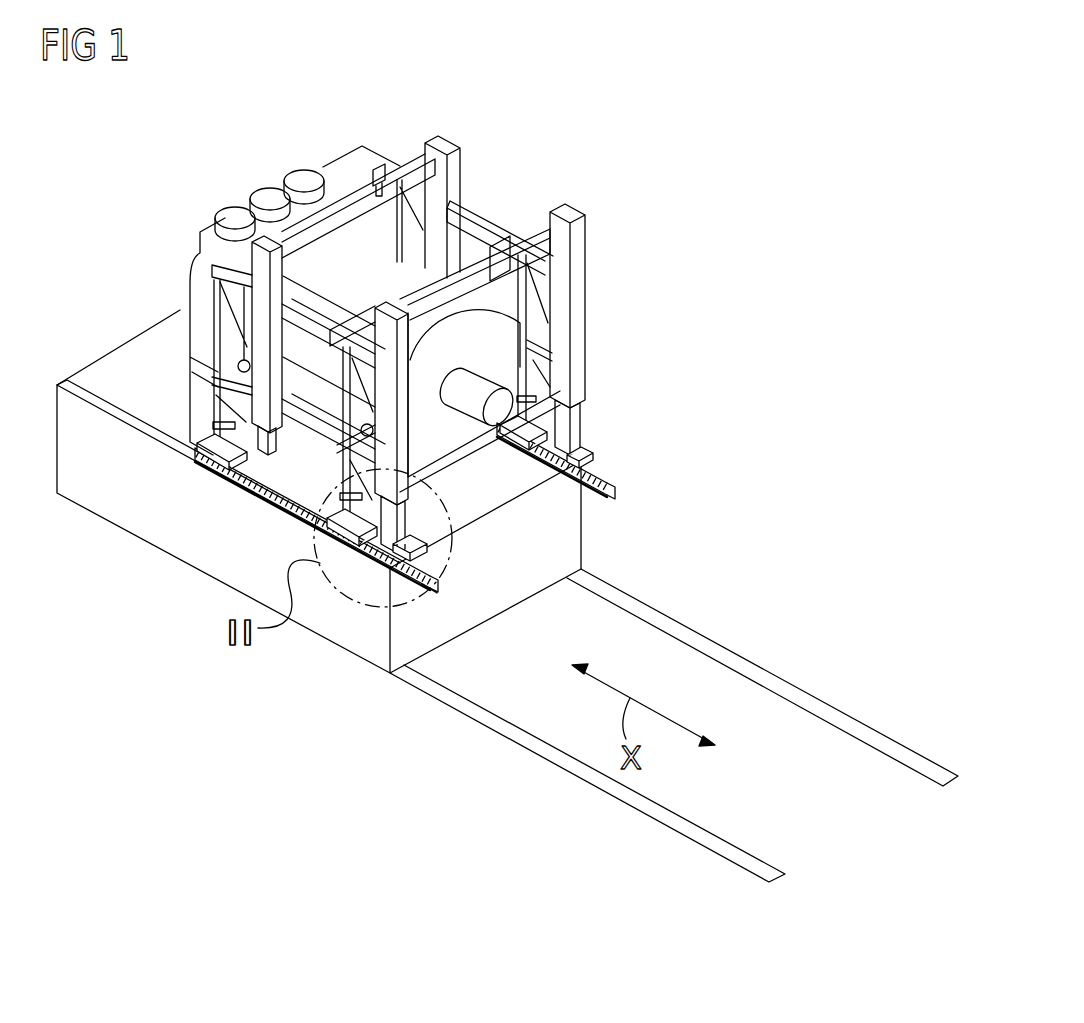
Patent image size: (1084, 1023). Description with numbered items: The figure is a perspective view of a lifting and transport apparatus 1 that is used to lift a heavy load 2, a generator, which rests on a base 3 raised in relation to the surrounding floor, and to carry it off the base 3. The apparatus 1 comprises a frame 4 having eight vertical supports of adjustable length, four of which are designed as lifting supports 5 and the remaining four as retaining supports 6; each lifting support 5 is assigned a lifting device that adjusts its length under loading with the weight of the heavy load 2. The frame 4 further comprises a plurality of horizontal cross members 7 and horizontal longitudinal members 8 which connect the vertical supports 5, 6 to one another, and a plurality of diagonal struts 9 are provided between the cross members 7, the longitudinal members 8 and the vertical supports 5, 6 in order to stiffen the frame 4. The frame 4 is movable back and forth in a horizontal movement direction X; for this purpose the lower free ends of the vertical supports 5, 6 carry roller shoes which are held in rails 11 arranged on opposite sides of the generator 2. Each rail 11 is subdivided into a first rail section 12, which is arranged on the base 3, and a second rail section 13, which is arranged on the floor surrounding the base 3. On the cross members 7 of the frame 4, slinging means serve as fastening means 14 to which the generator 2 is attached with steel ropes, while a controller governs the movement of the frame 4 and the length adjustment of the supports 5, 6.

The lifting and transport apparatus 1 is at (494, 331).
The heavy load 2 is at (320, 267).
The base 3 is at (137, 513).
The frame 4 is at (456, 331).
The lifting supports 5 is at (453, 163).
The retaining supports 6 is at (222, 410).
The horizontal cross members 7 is at (350, 200).
The horizontal longitudinal members 8 is at (488, 220).
The diagonal struts 9 is at (538, 283).
The rails 11 is at (735, 608).
The first rail section 12 is at (95, 397).
The second rail section 13 is at (554, 754).
The fastening means 14 is at (380, 178).